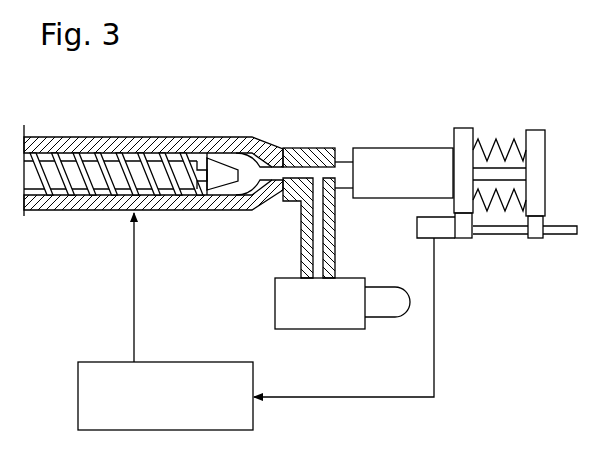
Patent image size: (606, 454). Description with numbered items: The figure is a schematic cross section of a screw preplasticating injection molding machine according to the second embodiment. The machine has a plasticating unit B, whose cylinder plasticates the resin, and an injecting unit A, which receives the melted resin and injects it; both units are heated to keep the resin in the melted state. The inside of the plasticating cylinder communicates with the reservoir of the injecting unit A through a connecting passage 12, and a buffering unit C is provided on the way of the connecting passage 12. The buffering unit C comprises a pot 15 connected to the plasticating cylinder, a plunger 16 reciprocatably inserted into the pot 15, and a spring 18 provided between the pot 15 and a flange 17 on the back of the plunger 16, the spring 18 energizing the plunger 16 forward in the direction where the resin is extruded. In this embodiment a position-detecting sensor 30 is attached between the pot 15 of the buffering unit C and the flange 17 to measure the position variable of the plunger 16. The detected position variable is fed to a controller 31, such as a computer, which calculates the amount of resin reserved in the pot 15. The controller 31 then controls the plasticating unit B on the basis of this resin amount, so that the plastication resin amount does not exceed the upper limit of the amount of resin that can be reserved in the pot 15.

The connecting passage 12 is at (301, 148).
The pot 15 is at (383, 156).
The plunger 16 is at (493, 175).
The flange 17 is at (541, 130).
The spring 18 is at (500, 207).
The position-detecting sensor 30 is at (440, 229).
The controller 31 is at (90, 372).
The injecting unit A is at (272, 277).
The plasticating unit B is at (207, 124).
The buffering unit C is at (431, 127).